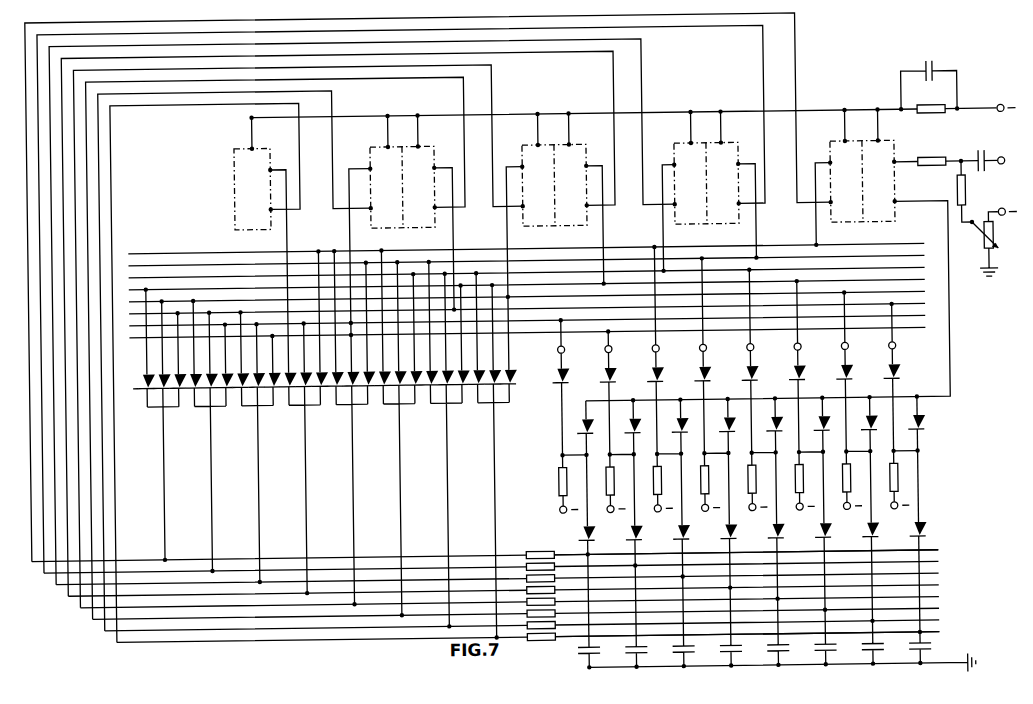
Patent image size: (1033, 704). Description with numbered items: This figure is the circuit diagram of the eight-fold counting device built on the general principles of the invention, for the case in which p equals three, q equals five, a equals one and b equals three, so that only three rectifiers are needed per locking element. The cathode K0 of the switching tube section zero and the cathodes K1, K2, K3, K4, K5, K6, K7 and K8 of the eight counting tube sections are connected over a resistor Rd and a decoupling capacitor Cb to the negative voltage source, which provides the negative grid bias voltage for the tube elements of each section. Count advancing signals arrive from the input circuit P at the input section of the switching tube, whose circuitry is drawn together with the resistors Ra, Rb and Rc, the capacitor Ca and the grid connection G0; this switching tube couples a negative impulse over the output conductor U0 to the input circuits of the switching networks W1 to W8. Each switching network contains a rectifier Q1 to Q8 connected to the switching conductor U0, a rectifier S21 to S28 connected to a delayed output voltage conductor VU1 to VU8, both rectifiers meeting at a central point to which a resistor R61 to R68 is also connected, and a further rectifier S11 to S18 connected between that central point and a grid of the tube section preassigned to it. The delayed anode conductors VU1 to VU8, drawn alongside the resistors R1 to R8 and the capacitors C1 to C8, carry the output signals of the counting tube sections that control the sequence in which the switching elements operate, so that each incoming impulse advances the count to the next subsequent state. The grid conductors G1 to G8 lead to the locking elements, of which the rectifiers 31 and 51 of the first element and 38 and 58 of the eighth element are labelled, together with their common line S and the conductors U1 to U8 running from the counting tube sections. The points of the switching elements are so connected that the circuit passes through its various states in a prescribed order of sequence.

The cathode of counting tube K8 is at (252, 181).
The cathode of counting tube K7 is at (402, 179).
The cathode of counting tube K6 is at (419, 179).
The cathode of counting tube K5 is at (554, 177).
The cathode of counting tube K4 is at (570, 177).
The cathode of counting tube K3 is at (706, 175).
The cathode of counting tube K2 is at (722, 175).
The cathode of counting tube K1 is at (862, 173).
The cathode of switching tube section K0 is at (878, 173).
The decoupling capacitor Cb is at (928, 76).
The resistor Rd is at (931, 118).
The resistor Rc is at (932, 153).
The capacitor Ca is at (980, 152).
The input circuit P is at (1006, 162).
The resistor Rb is at (970, 192).
The potentiometer Ra is at (995, 242).
The gate line G0 is at (906, 154).
The output conductor U0 is at (775, 305).
The gate line G1 is at (534, 244).
The gate line G8 is at (534, 329).
The gate control line S is at (131, 384).
The thyristor 31 is at (147, 348).
The thyristor 51 is at (164, 430).
The thyristor 38 is at (477, 338).
The thyristor 58 is at (495, 461).
The switching network W1 is at (551, 344).
The switching network W8 is at (901, 334).
The rectifier S11 is at (554, 418).
The rectifier S18 is at (901, 413).
The rectifier Q1 is at (587, 464).
The rectifier Q8 is at (928, 459).
The resistor R61 is at (558, 490).
The resistor R68 is at (889, 486).
The rectifier S21 is at (580, 585).
The rectifier S28 is at (927, 582).
The resistor R1 is at (540, 546).
The resistor R8 is at (541, 645).
The delayed anode conductor VU1 is at (759, 554).
The delayed anode conductor VU8 is at (760, 636).
The capacitor C1 is at (585, 658).
The capacitor C8 is at (927, 653).
The supply line U1 is at (475, 558).
The supply line U8 is at (518, 637).